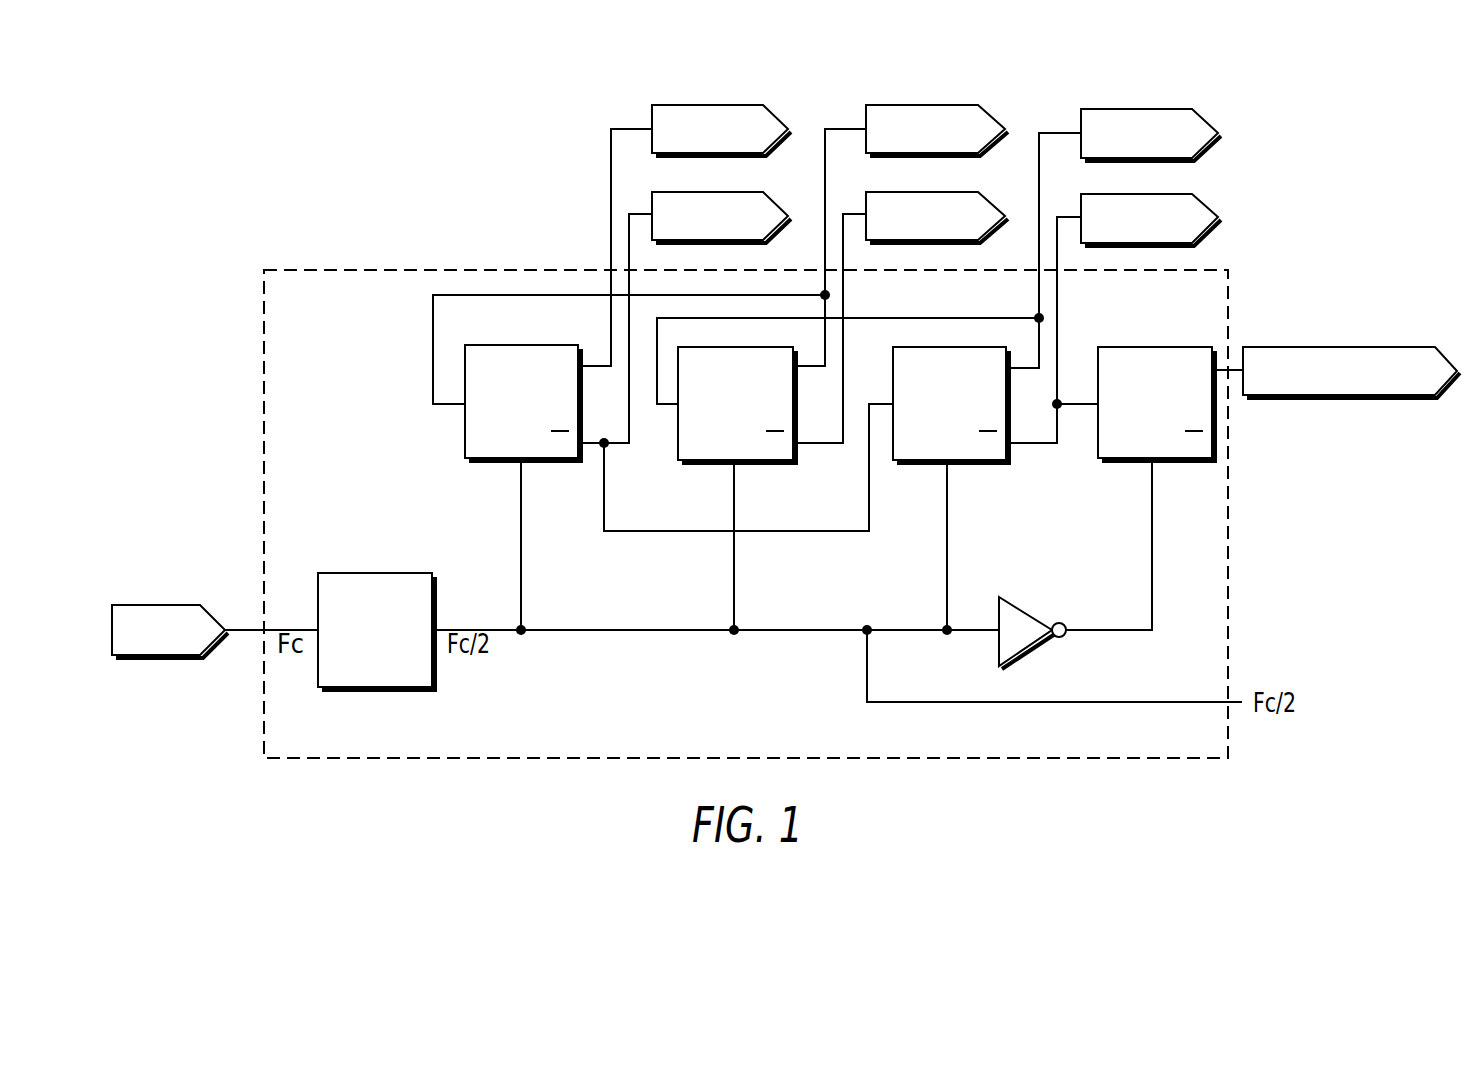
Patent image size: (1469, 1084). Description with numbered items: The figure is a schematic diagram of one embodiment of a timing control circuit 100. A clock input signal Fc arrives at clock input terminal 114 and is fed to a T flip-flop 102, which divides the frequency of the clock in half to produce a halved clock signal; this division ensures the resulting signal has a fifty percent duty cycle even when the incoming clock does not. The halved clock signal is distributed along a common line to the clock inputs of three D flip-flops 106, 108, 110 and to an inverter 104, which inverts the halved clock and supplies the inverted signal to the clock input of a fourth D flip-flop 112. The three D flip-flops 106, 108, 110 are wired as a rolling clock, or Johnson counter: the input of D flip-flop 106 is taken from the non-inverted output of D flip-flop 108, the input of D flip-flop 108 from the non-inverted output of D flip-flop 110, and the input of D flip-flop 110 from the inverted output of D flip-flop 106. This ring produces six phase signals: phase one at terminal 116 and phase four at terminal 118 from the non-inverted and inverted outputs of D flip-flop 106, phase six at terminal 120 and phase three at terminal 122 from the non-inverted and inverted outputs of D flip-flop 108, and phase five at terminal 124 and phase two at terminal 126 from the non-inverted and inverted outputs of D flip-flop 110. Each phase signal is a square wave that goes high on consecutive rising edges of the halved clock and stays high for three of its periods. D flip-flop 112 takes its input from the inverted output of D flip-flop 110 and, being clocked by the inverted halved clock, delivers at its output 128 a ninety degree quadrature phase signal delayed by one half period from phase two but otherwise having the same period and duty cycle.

The timing control circuit 100 is at (393, 270).
The T flip-flop 102 is at (370, 573).
The inverter 104 is at (1028, 609).
The D flip-flop 106 is at (522, 345).
The D flip-flop 108 is at (722, 347).
The D flip-flop 110 is at (942, 347).
The D flip-flop 112 is at (1128, 347).
The clock input terminal 114 is at (152, 605).
The terminal 116 is at (688, 105).
The terminal 118 is at (688, 192).
The terminal 120 is at (893, 105).
The terminal 122 is at (893, 192).
The terminal 124 is at (1123, 109).
The terminal 126 is at (1123, 194).
The 90 degree phase output 128 is at (1305, 347).